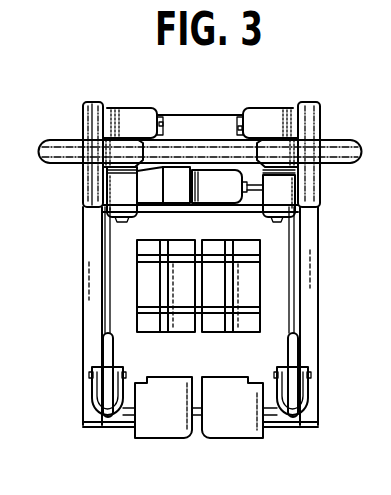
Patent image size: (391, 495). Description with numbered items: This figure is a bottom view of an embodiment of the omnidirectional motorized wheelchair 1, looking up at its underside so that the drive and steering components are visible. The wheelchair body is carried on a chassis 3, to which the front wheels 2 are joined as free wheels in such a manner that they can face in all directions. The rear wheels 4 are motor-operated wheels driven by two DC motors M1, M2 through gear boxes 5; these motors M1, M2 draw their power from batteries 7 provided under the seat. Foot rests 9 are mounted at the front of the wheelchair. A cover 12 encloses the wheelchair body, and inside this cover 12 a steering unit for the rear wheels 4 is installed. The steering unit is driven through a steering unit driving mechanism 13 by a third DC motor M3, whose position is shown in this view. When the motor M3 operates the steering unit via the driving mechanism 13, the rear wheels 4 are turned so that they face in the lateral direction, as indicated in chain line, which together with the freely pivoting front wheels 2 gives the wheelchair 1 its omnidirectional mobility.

The wheelchair 1 is at (210, 246).
The front wheels 2 is at (293, 353).
The chassis 3 is at (102, 313).
The rear wheels 4 is at (310, 123).
The gear boxes 5 is at (273, 153).
The batteries 7 is at (255, 283).
The foot rests 9 is at (230, 428).
The cover 12 is at (232, 127).
The steering unit driving mechanism 13 is at (178, 176).
The DC motor M1 is at (106, 214).
The DC motor M2 is at (287, 203).
The DC motor M3 is at (213, 177).